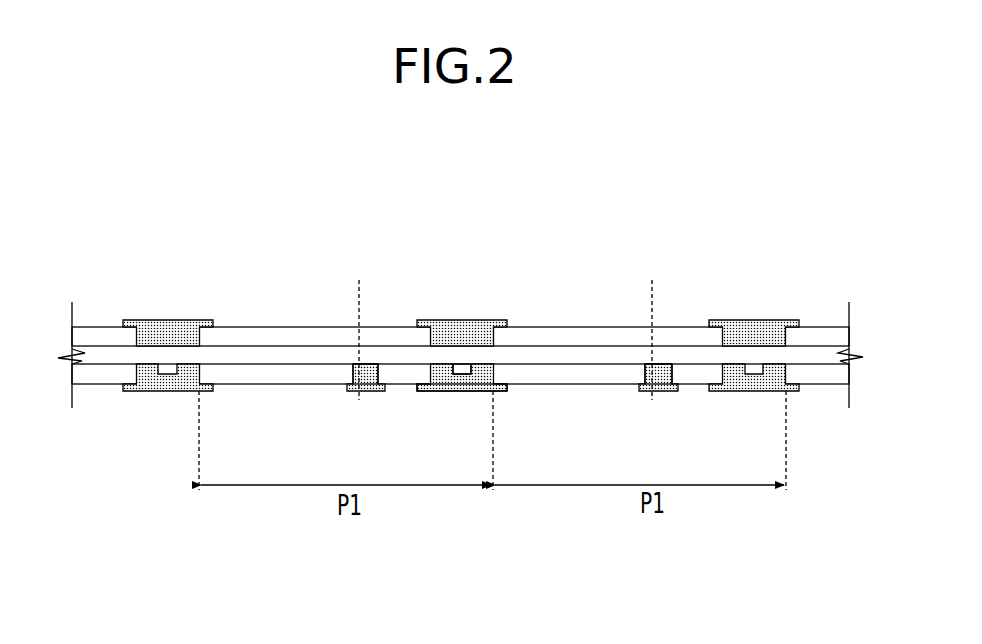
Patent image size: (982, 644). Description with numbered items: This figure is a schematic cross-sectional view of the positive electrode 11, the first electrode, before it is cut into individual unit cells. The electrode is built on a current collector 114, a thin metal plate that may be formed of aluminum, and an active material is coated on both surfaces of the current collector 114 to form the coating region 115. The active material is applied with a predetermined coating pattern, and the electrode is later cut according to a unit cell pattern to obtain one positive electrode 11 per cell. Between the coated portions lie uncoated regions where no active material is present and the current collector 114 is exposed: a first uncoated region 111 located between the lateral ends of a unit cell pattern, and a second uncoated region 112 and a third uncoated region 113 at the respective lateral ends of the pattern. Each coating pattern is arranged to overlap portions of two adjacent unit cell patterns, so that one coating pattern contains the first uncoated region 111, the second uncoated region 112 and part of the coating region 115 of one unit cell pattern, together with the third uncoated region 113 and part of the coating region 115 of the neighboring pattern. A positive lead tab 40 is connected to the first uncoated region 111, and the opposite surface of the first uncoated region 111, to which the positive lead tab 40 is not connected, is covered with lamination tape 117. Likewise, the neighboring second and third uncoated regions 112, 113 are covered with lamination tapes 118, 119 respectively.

The positive electrode 11 is at (650, 288).
The positive lead tab 40 is at (460, 370).
The first uncoated region 111 is at (480, 365).
The second uncoated region 112 is at (378, 377).
The third uncoated region 113 is at (673, 380).
The current collector 114 is at (312, 360).
The coating region 115 is at (253, 370).
The lamination tape 117 is at (448, 391).
The lamination tape 118 is at (370, 391).
The lamination tape 119 is at (662, 391).